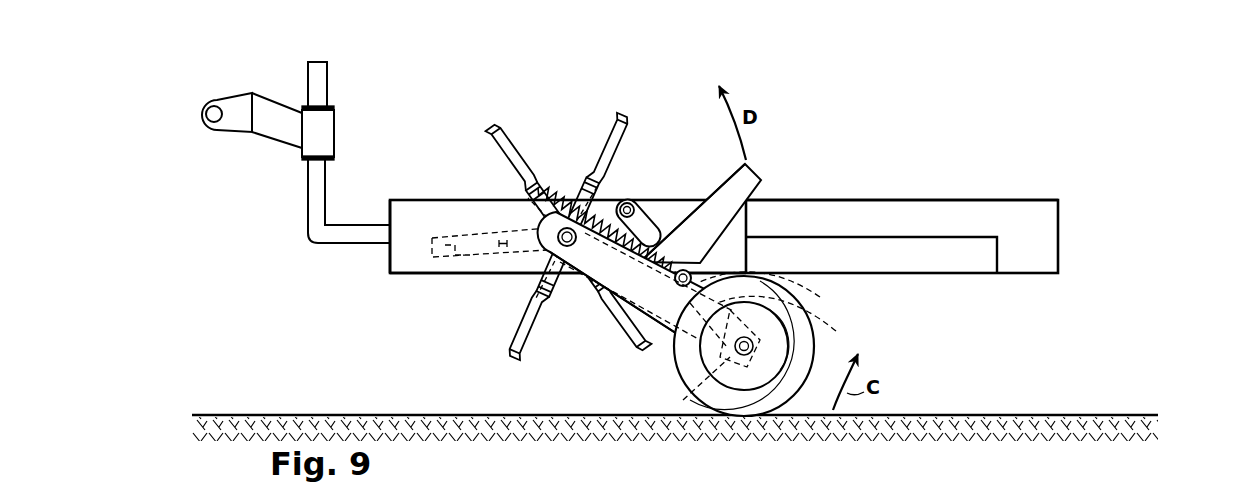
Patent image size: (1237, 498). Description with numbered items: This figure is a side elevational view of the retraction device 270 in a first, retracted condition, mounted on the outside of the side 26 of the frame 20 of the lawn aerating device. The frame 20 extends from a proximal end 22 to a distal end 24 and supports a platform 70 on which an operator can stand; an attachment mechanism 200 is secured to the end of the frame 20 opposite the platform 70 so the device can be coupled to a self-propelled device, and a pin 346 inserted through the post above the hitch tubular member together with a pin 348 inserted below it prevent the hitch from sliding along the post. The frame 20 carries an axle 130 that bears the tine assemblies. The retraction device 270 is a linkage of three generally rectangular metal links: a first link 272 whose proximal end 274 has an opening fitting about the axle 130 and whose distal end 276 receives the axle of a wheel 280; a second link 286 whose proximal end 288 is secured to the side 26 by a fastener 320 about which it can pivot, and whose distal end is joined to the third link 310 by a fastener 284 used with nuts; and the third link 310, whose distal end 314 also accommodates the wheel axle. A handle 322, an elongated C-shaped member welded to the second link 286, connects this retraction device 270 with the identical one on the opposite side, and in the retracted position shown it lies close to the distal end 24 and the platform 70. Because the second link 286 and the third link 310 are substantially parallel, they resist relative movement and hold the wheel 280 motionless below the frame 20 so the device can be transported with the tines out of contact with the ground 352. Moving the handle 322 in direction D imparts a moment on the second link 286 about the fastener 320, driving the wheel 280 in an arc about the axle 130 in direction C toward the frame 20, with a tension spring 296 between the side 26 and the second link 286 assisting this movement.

The frame 20 is at (407, 278).
The proximal end 22 is at (389, 208).
The distal end 24 is at (796, 192).
The side 26 is at (404, 254).
The platform 70 is at (972, 277).
The axle 130 is at (559, 246).
The attachment mechanism 200 is at (388, 124).
The retraction device 270 is at (645, 306).
The first link 272 is at (656, 348).
The proximal end 274 is at (545, 240).
The distal end 276 is at (691, 397).
The wheel 280 is at (706, 411).
The fastener 284 is at (694, 270).
The second link 286 is at (700, 241).
The proximal end 288 is at (634, 192).
The tension spring 296 is at (581, 201).
The third link 310 is at (781, 290).
The distal end 314 is at (797, 318).
The fastener 320 is at (632, 197).
The handle 322 is at (760, 179).
The pin 346 is at (333, 110).
The pin 348 is at (319, 162).
The ground 352 is at (273, 414).